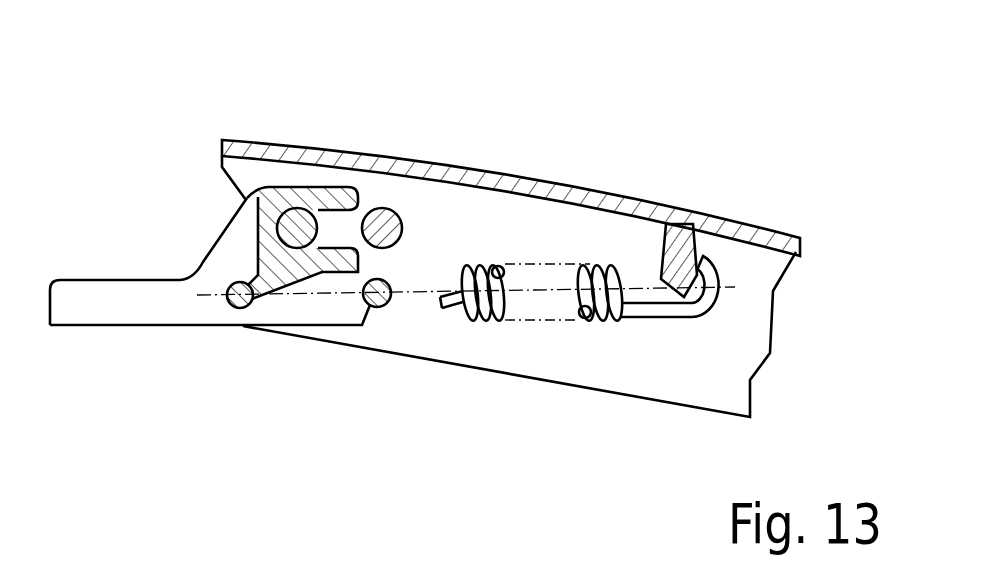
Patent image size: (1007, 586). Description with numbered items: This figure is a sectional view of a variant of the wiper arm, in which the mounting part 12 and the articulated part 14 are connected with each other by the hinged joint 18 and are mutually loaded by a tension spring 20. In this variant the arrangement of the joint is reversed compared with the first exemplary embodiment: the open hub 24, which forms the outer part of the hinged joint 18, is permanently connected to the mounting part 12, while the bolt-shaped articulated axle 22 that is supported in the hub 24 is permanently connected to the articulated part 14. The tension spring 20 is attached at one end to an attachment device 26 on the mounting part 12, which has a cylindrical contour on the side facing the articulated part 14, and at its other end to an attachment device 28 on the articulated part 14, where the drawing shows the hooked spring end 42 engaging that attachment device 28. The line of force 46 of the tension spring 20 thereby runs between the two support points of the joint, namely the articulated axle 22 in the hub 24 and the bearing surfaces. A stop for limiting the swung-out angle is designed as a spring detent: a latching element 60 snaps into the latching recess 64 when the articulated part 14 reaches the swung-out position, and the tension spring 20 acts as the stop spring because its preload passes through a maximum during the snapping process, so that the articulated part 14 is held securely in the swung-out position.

The mounting part 12 is at (137, 310).
The articulated part 14 is at (594, 200).
The hinged joint 18 is at (123, 107).
The tension spring 20 is at (650, 283).
The articulated axle 22 is at (200, 108).
The hub 24 is at (333, 195).
The attachment device 26 is at (243, 308).
The attachment device 28 is at (687, 230).
The spring hook 42 is at (740, 166).
The line of force 46 is at (398, 415).
The latching element 60 is at (443, 132).
The latching recess 64 is at (346, 132).